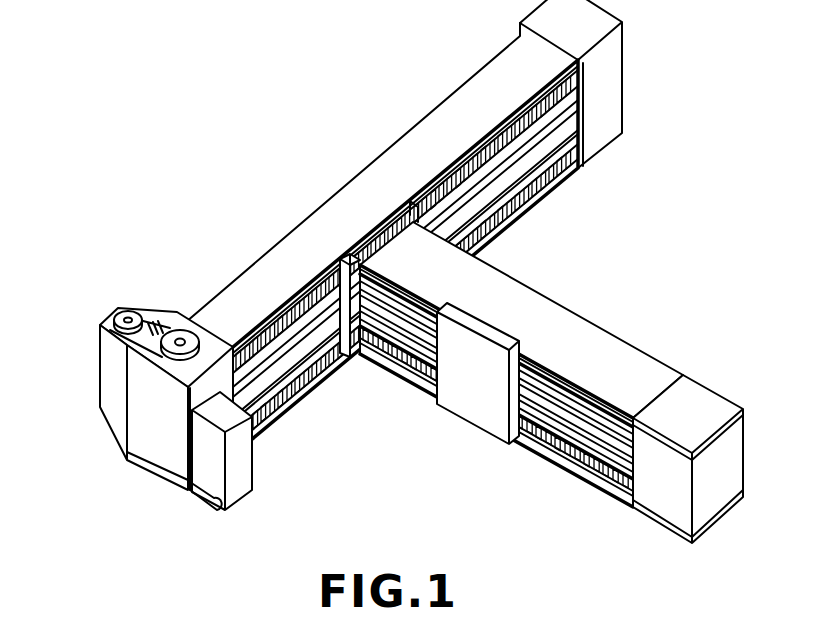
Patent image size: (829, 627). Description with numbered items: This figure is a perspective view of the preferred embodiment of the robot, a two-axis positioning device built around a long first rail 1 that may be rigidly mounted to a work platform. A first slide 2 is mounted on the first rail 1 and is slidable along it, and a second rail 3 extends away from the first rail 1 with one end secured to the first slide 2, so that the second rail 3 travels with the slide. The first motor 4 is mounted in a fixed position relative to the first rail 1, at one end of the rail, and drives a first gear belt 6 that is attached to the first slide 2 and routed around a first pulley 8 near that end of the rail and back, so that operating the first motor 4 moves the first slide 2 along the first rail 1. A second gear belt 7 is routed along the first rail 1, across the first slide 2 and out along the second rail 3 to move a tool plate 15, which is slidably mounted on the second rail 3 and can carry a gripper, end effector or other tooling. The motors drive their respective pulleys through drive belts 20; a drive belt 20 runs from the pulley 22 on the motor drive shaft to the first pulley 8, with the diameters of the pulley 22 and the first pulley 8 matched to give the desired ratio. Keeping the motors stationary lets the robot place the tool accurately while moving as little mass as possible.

The first rail 1 is at (467, 120).
The first slide 2 is at (357, 340).
The second rail 3 is at (590, 352).
The first motor 4 is at (100, 340).
The first gear belt 6 is at (317, 280).
The second gear belt 7 is at (275, 392).
The first pulley 8 is at (190, 332).
The tool plate 15 is at (473, 412).
The drive belt 20 is at (128, 337).
The motor drive shaft pulley 22 is at (135, 310).